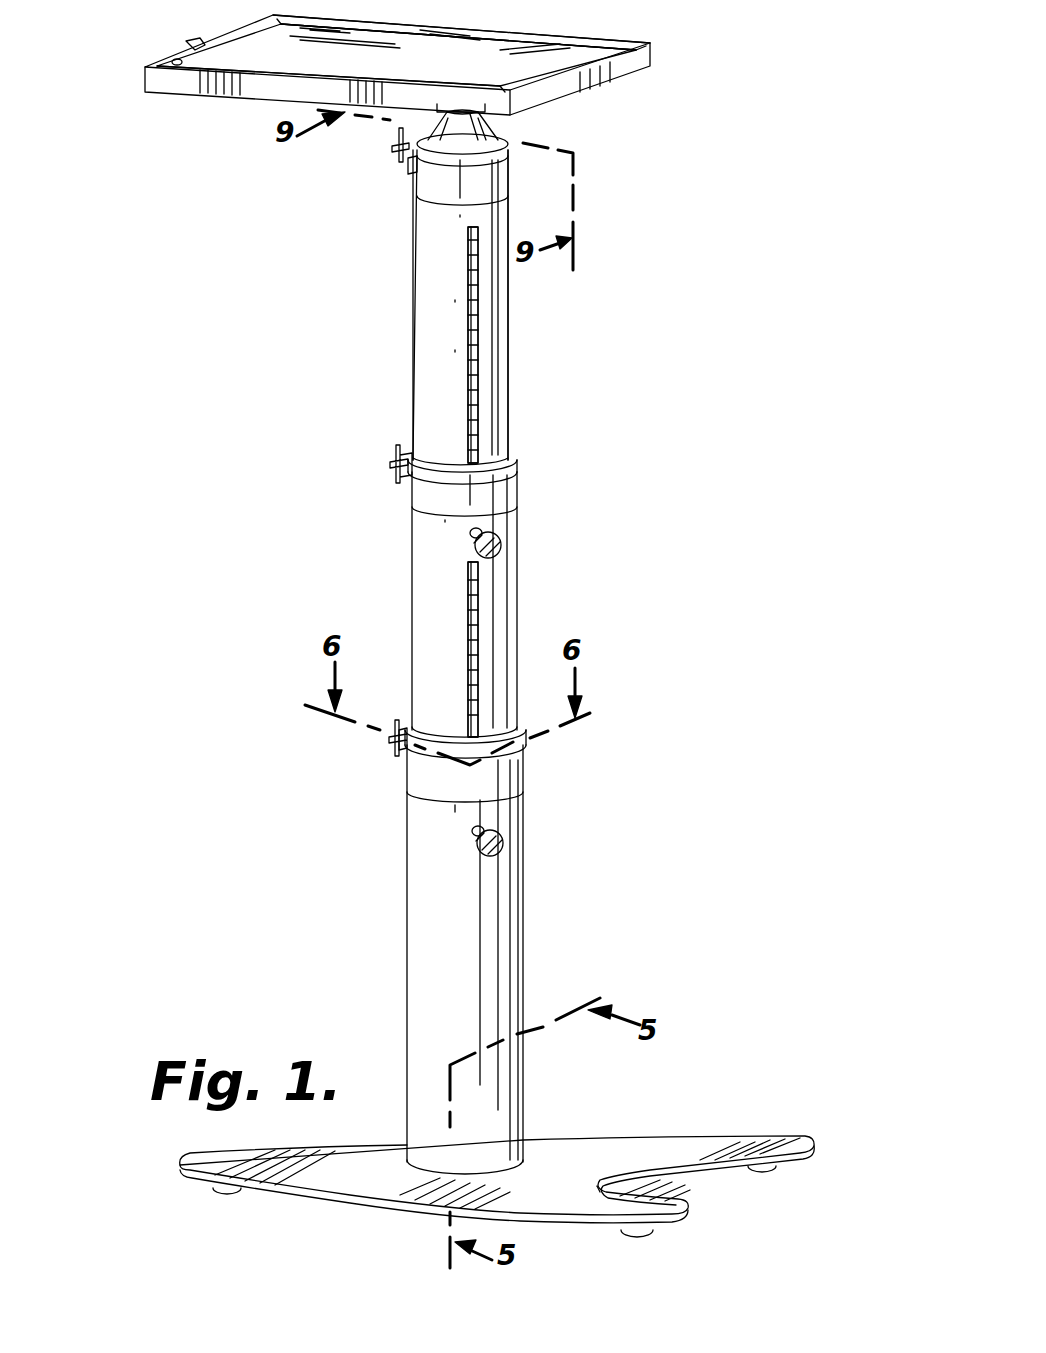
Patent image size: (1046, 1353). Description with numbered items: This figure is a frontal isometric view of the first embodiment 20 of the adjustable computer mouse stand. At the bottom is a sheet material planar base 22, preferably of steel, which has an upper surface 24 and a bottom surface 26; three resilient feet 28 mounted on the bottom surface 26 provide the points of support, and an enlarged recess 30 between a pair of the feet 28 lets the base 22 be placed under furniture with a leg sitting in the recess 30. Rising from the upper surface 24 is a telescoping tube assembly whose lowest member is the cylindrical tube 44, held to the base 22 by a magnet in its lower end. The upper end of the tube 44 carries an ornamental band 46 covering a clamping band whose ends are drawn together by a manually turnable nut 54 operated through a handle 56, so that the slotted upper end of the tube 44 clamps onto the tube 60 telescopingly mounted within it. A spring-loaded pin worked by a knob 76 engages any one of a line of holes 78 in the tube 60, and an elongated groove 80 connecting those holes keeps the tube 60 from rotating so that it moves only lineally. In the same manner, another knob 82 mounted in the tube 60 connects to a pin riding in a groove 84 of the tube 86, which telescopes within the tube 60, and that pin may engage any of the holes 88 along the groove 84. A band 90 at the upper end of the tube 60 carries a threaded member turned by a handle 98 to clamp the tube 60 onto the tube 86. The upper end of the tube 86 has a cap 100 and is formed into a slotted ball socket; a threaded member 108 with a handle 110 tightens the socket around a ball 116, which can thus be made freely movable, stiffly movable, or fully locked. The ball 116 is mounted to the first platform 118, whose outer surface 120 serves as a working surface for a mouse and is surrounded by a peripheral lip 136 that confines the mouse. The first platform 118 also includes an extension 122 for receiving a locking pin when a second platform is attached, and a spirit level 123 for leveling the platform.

The first embodiment of mouse stand 20 is at (713, 218).
The base 22 is at (597, 1134).
The upper surface 24 is at (355, 1158).
The bottom surface 26 is at (375, 1202).
The resilient feet 28 is at (213, 1192).
The recess 30 is at (692, 1178).
The tube 44 is at (407, 956).
The ornamental band 46 is at (523, 772).
The manually turnable nut 54 is at (397, 718).
The handle 56 is at (396, 752).
The tube 60 is at (520, 590).
The knob 76 is at (503, 838).
The holes 78 is at (468, 614).
The elongated groove 80 is at (468, 575).
The knob 82 is at (501, 543).
The groove 84 is at (473, 350).
The tube 86 is at (510, 316).
The holes 88 is at (473, 406).
The band 90 is at (518, 484).
The handle 98 is at (390, 450).
The cap 100 is at (497, 182).
The threaded member 108 is at (410, 176).
The handle 110 is at (396, 134).
The ball 116 is at (497, 125).
The first platform 118 is at (625, 72).
The outer surface 120 is at (320, 66).
The extension 122 is at (185, 40).
The spirit level 123 is at (170, 62).
The peripheral lip 136 is at (565, 32).